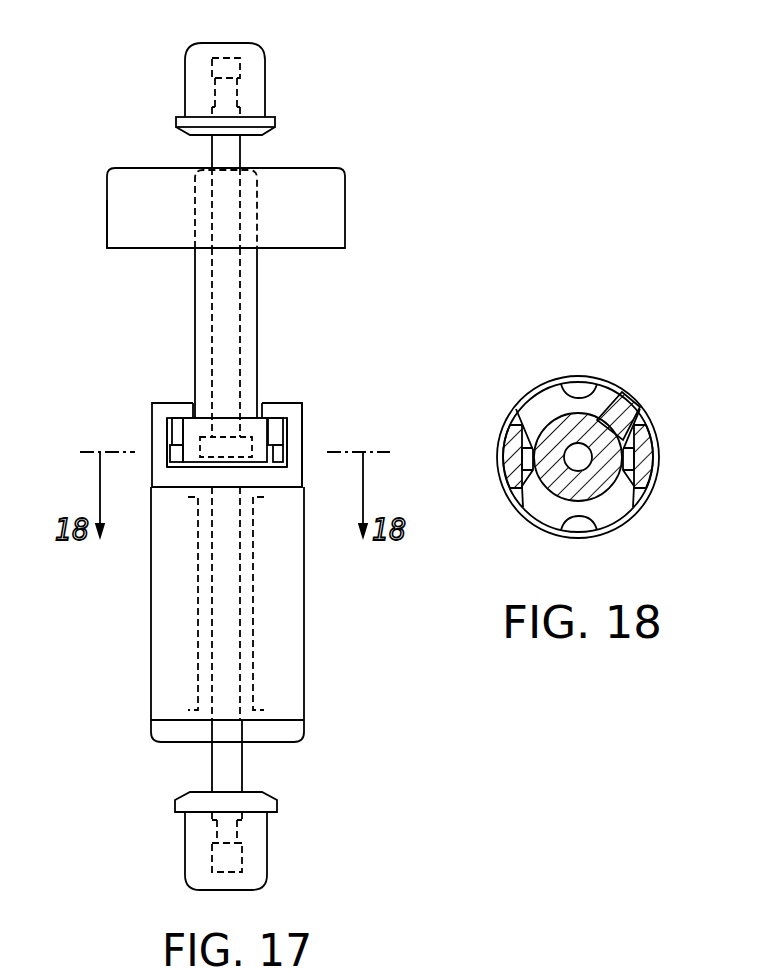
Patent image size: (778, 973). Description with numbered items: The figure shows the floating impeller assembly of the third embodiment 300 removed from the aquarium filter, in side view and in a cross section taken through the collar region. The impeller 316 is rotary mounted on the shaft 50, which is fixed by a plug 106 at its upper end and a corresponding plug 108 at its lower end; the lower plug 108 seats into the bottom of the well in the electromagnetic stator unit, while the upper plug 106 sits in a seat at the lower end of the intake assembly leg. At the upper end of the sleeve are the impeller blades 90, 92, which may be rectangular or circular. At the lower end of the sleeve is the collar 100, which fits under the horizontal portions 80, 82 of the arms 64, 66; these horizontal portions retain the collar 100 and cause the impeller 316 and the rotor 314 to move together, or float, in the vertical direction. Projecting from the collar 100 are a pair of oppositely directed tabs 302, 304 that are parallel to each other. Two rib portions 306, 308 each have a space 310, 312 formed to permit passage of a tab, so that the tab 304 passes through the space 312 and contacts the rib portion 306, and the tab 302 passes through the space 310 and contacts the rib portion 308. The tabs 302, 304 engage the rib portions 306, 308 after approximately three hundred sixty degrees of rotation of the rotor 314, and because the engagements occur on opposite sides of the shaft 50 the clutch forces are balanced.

In FIG. 17, the shaft 50 is at (241, 153).
In FIG. 17, the arm 64 is at (152, 417).
In FIG. 17, the arm 66 is at (303, 438).
In FIG. 17, the horizontal portion 80 is at (168, 403).
In FIG. 17, the horizontal portion 82 is at (288, 407).
In FIG. 17, the impeller blade 90 is at (345, 210).
In FIG. 17, the impeller blade 92 is at (107, 222).
In FIG. 18, the collar 100 is at (607, 417).
In FIG. 17, the plug 106 is at (265, 97).
In FIG. 17, the plug 108 is at (267, 843).
In FIG. 17, the third embodiment 300 is at (317, 688).
In FIG. 17, the tab 302 is at (173, 467).
In FIG. 18, the tab 302 is at (525, 510).
In FIG. 17, the tab 304 is at (257, 418).
In FIG. 18, the tab 304 is at (633, 397).
In FIG. 17, the rib portion 306 is at (275, 450).
In FIG. 18, the rib portion 306 is at (637, 514).
In FIG. 17, the rib portion 308 is at (162, 452).
In FIG. 18, the rib portion 308 is at (522, 416).
In FIG. 17, the space 310 is at (277, 467).
In FIG. 17, the space 312 is at (175, 430).
In FIG. 17, the rotor 314 is at (304, 637).
In FIG. 17, the impeller 316 is at (257, 300).